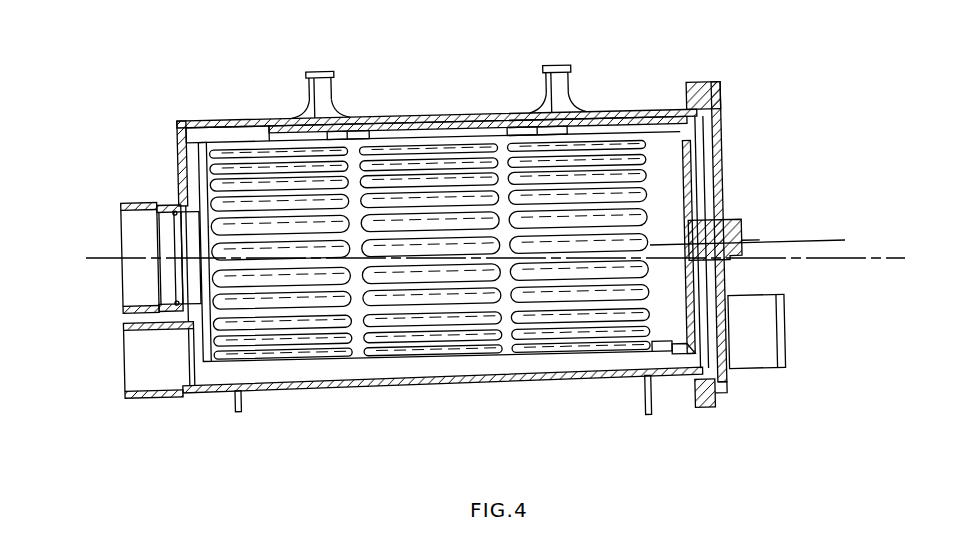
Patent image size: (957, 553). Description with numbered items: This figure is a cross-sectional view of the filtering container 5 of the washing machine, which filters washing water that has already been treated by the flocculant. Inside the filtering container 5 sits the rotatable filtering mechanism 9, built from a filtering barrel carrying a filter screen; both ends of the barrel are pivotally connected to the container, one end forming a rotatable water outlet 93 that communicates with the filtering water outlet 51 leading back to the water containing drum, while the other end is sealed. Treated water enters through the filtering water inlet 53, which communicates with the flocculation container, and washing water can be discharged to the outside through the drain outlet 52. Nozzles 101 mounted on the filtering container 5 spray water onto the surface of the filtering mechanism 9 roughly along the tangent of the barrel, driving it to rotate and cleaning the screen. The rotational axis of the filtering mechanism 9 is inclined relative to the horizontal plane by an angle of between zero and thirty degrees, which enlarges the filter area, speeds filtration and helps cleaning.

The filtering container 5 is at (245, 120).
The filtering mechanism 9 is at (664, 171).
The filtering water outlet 51 is at (150, 230).
The drain outlet 52 is at (168, 367).
The filtering water inlet 53 is at (752, 347).
The rotatable water outlet 93 is at (178, 205).
The nozzle 101 is at (567, 108).